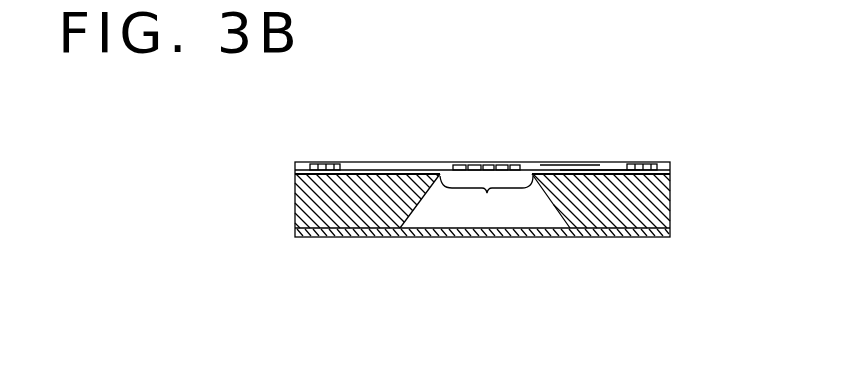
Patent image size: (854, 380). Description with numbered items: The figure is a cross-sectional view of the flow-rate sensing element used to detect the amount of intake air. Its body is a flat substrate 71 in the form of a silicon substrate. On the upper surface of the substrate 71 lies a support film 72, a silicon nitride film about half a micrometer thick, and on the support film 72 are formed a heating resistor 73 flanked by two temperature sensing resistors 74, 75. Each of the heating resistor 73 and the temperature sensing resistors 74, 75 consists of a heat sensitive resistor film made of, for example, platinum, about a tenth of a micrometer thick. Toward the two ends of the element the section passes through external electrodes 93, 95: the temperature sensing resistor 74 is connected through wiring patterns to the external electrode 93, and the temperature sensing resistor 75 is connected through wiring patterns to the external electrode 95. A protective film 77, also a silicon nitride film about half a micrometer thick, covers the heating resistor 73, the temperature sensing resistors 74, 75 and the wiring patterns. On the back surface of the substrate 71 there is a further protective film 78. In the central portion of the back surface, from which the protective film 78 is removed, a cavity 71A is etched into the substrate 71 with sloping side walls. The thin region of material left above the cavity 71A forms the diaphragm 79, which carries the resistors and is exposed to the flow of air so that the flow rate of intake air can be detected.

The substrate 71 is at (660, 192).
The cavity 71A is at (528, 218).
The support film 72 is at (597, 170).
The heating resistor 73 is at (492, 166).
The temperature sensing resistor 74 is at (457, 166).
The temperature sensing resistor 75 is at (516, 166).
The protective film 77 is at (565, 165).
The protective film 78 is at (360, 238).
The diaphragm 79 is at (486, 203).
The external electrode 93 is at (321, 166).
The external electrode 95 is at (645, 166).